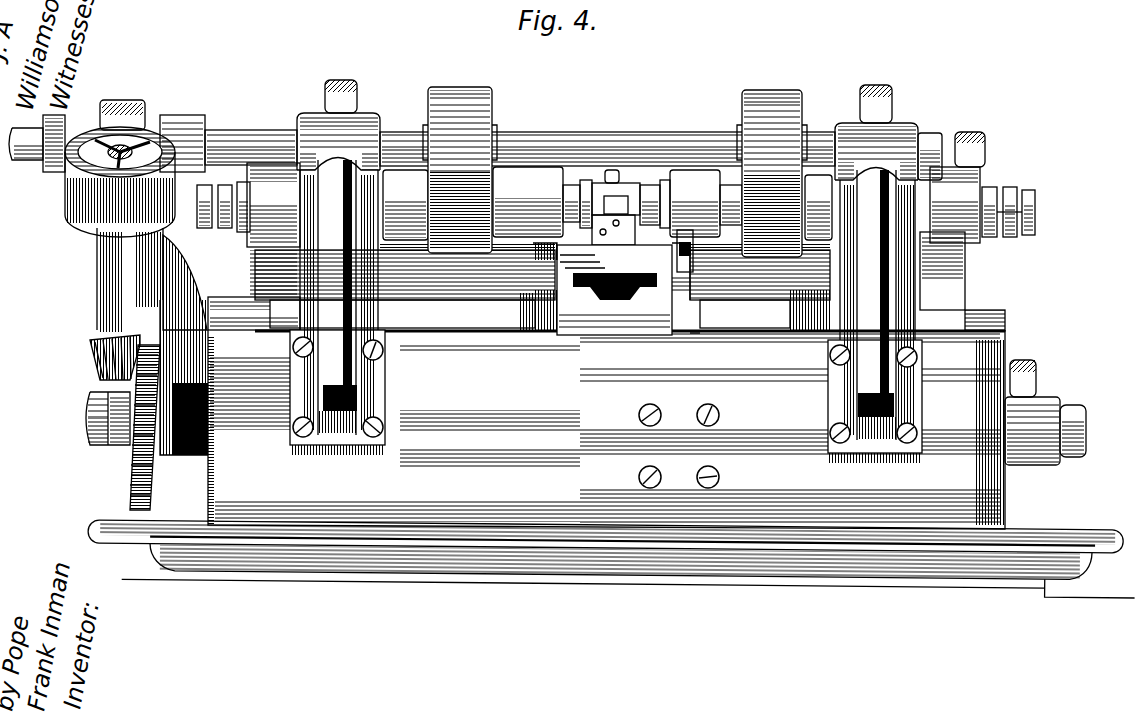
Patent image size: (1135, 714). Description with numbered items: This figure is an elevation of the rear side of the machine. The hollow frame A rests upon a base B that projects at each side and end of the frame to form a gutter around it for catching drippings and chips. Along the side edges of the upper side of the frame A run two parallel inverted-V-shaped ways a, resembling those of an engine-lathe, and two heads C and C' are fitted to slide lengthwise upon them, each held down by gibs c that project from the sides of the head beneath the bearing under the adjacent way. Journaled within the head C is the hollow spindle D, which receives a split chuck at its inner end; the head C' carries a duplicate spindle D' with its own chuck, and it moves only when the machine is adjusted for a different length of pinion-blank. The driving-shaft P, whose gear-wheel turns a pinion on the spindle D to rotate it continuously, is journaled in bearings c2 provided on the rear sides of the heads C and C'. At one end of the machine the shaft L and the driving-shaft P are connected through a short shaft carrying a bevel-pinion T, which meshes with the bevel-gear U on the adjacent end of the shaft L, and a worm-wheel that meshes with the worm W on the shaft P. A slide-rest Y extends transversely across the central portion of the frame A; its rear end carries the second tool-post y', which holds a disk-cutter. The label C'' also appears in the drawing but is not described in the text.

The worm W is at (118, 125).
The driving-shaft P is at (240, 145).
The bearings c2 is at (606, 271).
The spindle D' is at (591, 168).
The hollow spindle D is at (616, 177).
The second tool-post y' is at (617, 206).
The left bearing block C'' is at (269, 229).
The ways a is at (254, 307).
The head C' is at (630, 287).
The slide-rest Y is at (613, 282).
The head C is at (847, 281).
The gib c is at (702, 335).
The bevel-pinion T is at (92, 350).
The shaft L is at (84, 412).
The bevel-gear U is at (133, 480).
The hollow frame A is at (616, 429).
The base B is at (664, 588).